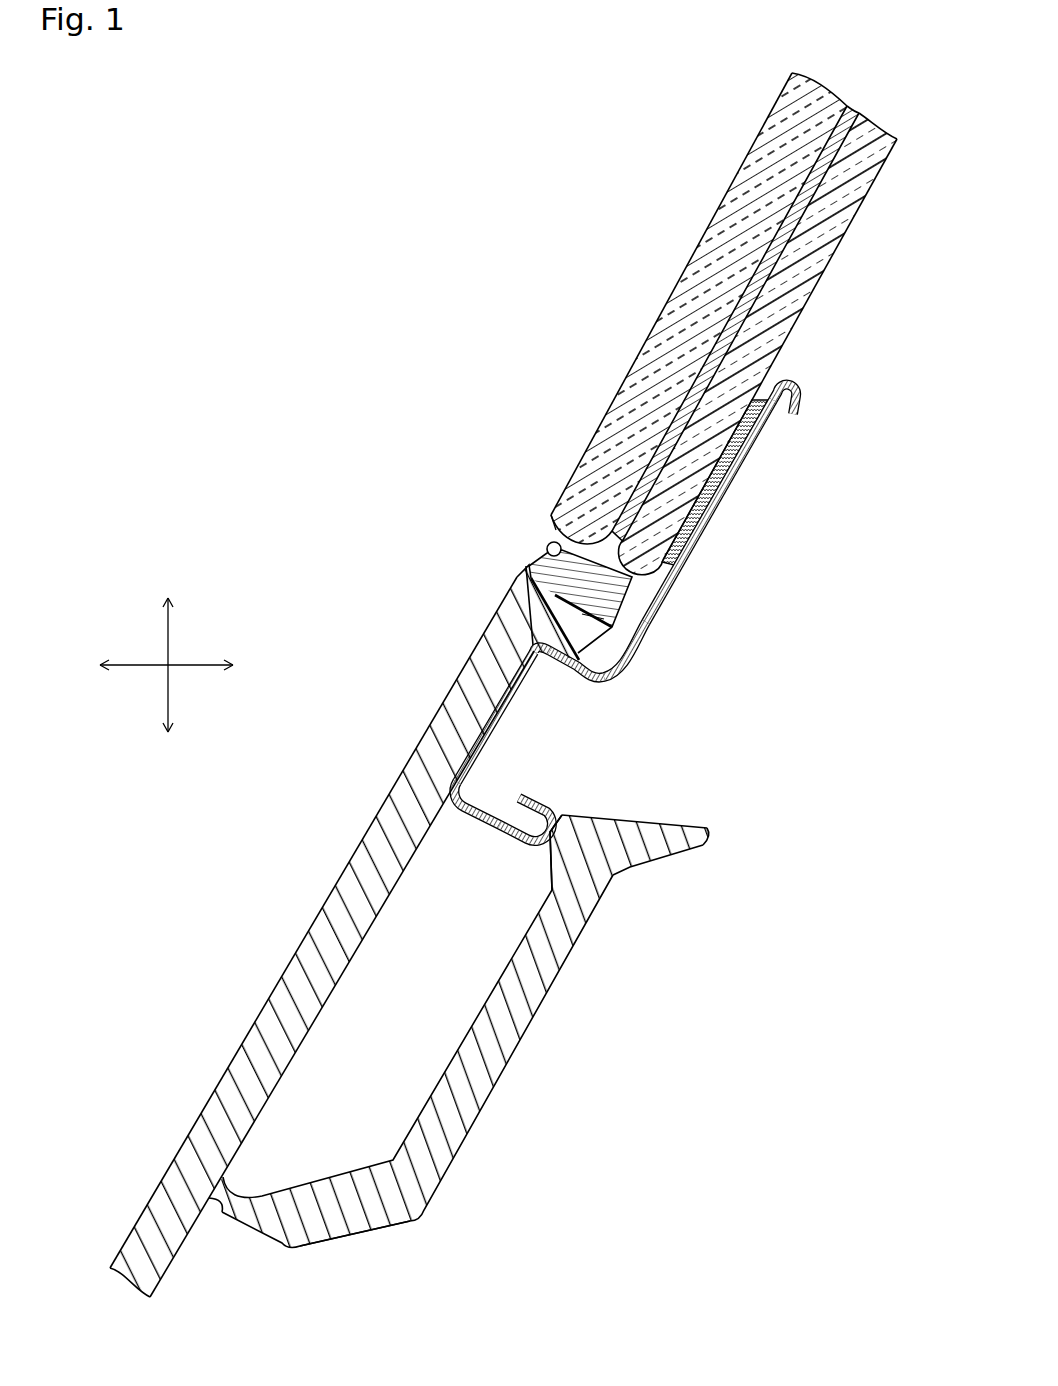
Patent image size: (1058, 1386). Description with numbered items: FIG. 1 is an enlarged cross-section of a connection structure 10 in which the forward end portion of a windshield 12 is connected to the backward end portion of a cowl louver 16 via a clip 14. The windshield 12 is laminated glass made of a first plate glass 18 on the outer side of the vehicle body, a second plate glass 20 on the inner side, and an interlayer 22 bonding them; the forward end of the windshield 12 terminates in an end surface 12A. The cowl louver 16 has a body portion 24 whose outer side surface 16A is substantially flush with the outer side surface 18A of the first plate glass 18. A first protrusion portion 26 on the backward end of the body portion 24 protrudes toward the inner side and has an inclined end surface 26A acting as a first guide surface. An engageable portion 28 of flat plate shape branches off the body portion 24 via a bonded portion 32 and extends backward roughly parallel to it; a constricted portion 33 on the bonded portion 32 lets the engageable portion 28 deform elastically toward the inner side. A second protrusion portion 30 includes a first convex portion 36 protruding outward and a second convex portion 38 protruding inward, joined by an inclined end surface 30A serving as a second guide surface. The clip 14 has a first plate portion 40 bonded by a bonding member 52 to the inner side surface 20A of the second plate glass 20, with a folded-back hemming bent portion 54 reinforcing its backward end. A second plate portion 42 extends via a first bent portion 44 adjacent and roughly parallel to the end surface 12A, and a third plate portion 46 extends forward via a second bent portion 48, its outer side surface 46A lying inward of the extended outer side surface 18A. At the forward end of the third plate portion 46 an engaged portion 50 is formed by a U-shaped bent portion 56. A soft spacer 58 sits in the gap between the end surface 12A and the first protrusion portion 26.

The connection structure 10 is at (355, 460).
The windshield 12 is at (692, 222).
The end surface 12A is at (546, 541).
The clip 14 is at (677, 627).
The cowl louver 16 is at (160, 1152).
The outer side surface 16A is at (150, 1213).
The first plate glass 18 is at (663, 326).
The outer side surface 18A is at (627, 378).
The second plate glass 20 is at (877, 177).
The inner side surface 20A is at (817, 283).
The interlayer 22 is at (795, 232).
The body portion 24 is at (145, 1263).
The first protrusion portion 26 is at (558, 625).
The end surface 26A is at (630, 651).
The engageable portion 28 is at (520, 1057).
The second protrusion portion 30 is at (606, 848).
The end surface 30A is at (645, 820).
The bonded portion 32 is at (320, 1224).
The constricted portion 33 is at (235, 1202).
The first convex portion 36 is at (556, 828).
The second convex portion 38 is at (707, 829).
The first plate portion 40 is at (713, 522).
The second plate portion 42 is at (577, 671).
The first bent portion 44 is at (610, 678).
The third plate portion 46 is at (485, 742).
The outer side surface 46A is at (487, 712).
The second bent portion 48 is at (524, 647).
The engaged portion 50 is at (540, 798).
The bonding member 52 is at (743, 476).
The bent portion 54 is at (799, 400).
The bent portion 56 is at (540, 841).
The spacer 58 is at (546, 551).